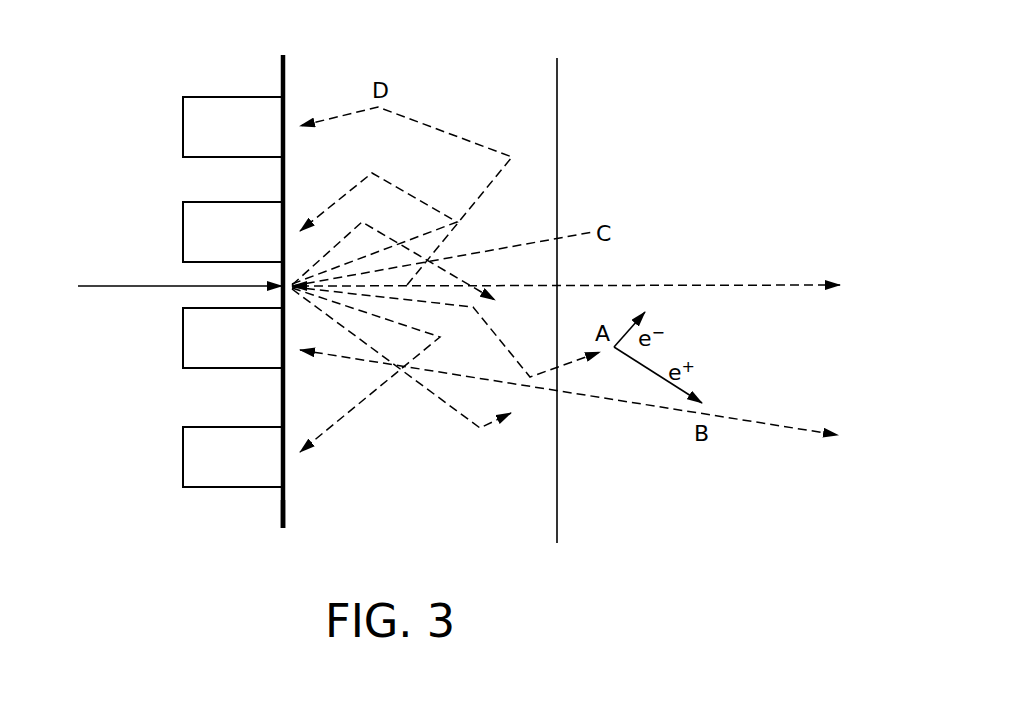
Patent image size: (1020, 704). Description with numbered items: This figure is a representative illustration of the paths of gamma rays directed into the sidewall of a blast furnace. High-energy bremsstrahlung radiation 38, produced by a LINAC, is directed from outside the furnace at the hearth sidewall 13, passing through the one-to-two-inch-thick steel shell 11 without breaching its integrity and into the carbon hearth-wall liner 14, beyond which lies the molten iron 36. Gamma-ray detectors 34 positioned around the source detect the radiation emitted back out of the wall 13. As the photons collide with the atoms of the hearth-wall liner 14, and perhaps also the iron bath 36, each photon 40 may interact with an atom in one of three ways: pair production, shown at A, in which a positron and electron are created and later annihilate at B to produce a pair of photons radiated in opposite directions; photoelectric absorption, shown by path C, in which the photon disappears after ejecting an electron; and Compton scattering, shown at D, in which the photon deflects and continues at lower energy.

The steel shell 11 is at (283, 76).
The wall 13 is at (249, 523).
The hearth-wall liner 14 is at (438, 85).
The gamma-ray detectors 34 is at (181, 217).
The molten iron 36 is at (634, 85).
The bremsstrahlung radiation 38 is at (108, 288).
The photon 40 is at (437, 398).